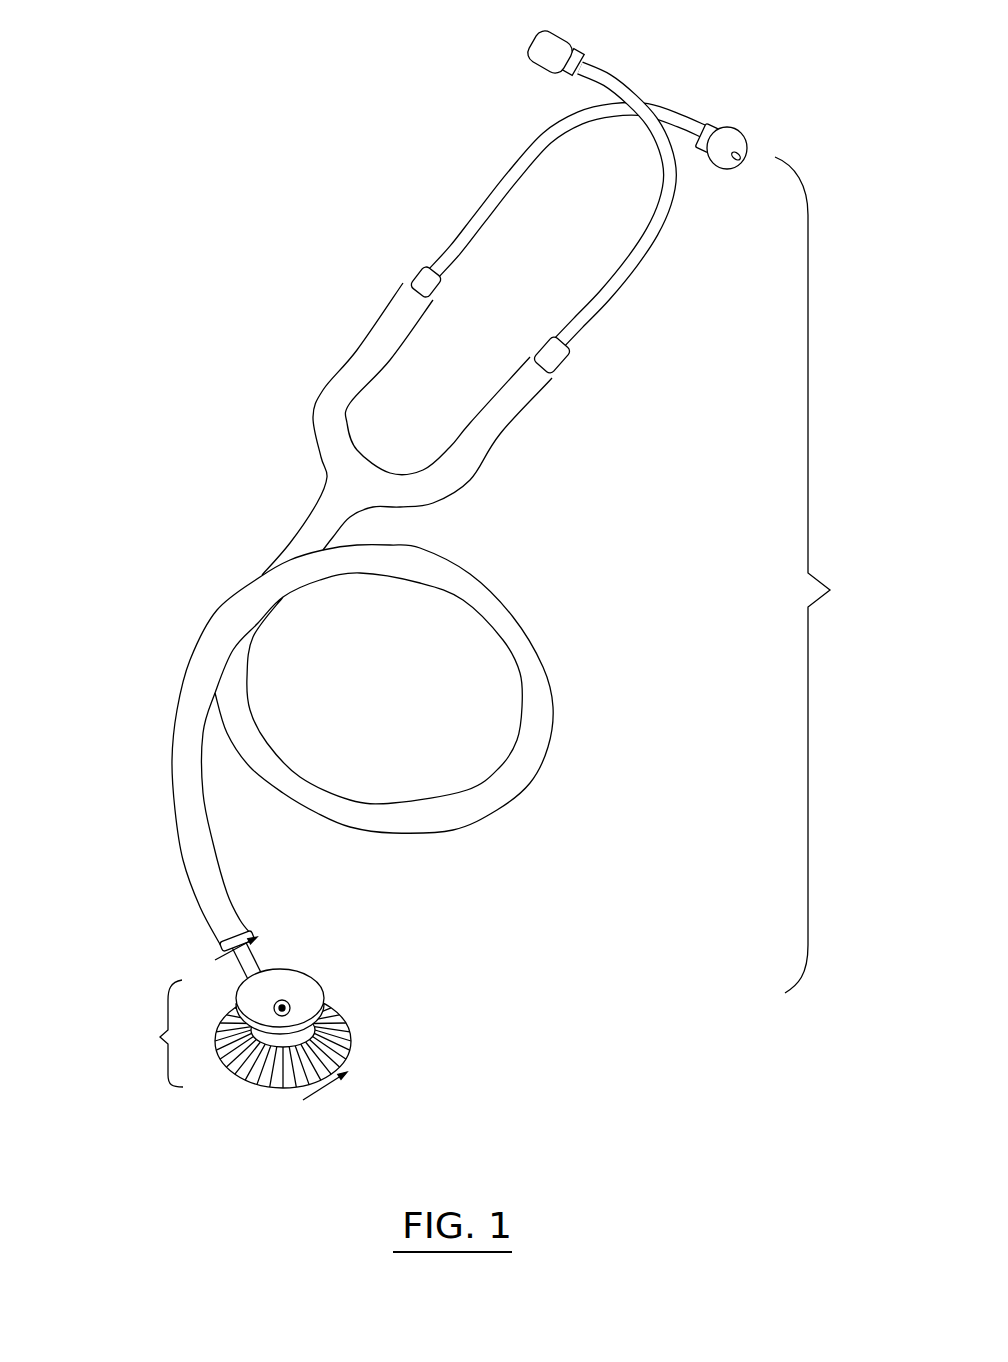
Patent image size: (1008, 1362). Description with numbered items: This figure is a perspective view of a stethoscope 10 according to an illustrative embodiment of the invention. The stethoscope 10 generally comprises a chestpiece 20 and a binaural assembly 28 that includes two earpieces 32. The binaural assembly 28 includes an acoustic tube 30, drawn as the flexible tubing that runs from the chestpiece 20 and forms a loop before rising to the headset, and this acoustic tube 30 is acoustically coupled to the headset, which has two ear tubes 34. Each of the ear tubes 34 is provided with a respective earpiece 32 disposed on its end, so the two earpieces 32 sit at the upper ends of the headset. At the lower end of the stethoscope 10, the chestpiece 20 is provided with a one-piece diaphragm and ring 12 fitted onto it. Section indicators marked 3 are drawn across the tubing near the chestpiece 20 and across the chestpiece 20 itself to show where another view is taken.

The stethoscope 10 is at (118, 1058).
The one-piece diaphragm and ring 12 is at (343, 1010).
The chestpiece 20 is at (156, 1033).
The binaural assembly 28 is at (825, 575).
The acoustic tube 30 is at (462, 577).
The earpiece 32 is at (743, 137).
The ear tube 34 is at (497, 197).
The section line 3 is at (294, 1009).